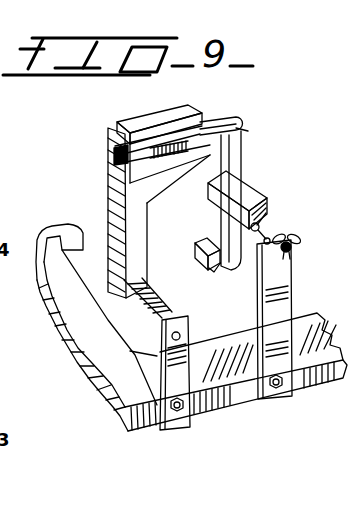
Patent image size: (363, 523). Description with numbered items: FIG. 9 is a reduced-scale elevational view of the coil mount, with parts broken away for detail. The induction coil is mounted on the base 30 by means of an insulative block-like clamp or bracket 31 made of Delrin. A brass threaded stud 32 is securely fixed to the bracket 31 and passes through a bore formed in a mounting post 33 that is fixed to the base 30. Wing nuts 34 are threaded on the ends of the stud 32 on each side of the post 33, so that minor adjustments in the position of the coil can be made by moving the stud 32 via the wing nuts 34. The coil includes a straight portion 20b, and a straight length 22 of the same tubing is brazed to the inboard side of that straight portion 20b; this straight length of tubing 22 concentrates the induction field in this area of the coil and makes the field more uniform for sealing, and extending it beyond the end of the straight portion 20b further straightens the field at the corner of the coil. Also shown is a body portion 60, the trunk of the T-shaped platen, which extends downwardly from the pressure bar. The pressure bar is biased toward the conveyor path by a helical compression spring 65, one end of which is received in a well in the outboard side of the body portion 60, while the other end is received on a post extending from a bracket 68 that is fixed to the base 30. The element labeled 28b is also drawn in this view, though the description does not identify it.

The clamp bar 28b is at (112, 118).
The straight portion 20b is at (214, 126).
The straight length of tubing 22 is at (248, 131).
The bracket 31 is at (268, 197).
The threaded stud 32 is at (262, 223).
The wing nut 34 is at (297, 256).
The mounting post 33 is at (296, 299).
The body portion 60 is at (142, 222).
The helical compression spring 65 is at (158, 302).
The bracket 68 is at (140, 417).
The base 30 is at (238, 394).